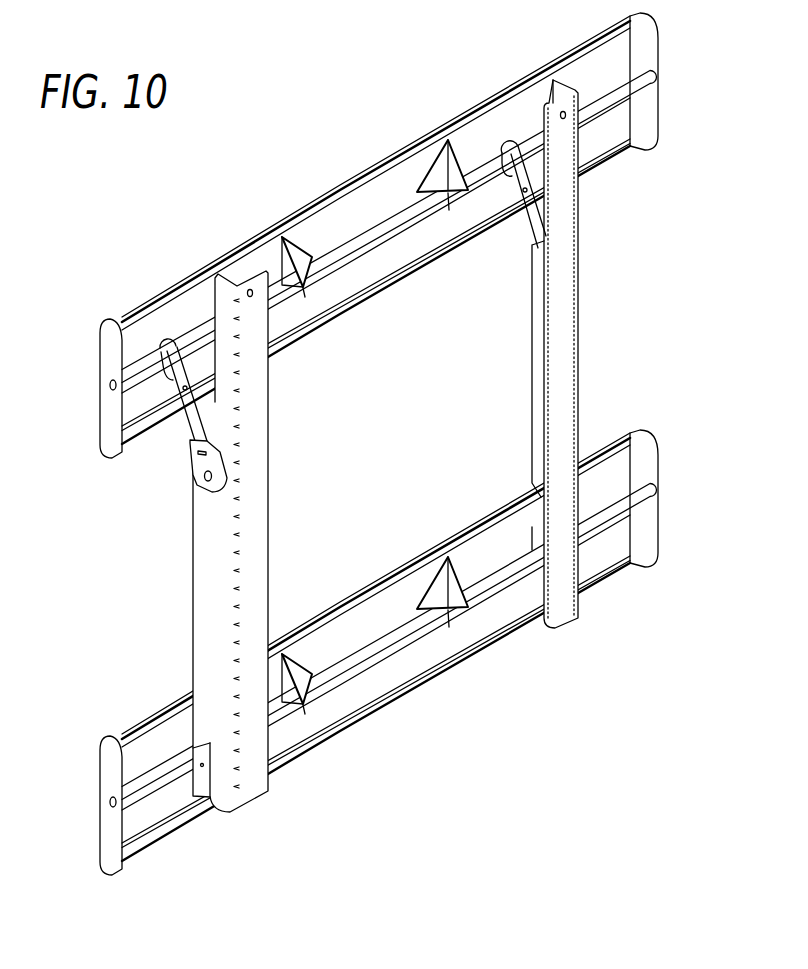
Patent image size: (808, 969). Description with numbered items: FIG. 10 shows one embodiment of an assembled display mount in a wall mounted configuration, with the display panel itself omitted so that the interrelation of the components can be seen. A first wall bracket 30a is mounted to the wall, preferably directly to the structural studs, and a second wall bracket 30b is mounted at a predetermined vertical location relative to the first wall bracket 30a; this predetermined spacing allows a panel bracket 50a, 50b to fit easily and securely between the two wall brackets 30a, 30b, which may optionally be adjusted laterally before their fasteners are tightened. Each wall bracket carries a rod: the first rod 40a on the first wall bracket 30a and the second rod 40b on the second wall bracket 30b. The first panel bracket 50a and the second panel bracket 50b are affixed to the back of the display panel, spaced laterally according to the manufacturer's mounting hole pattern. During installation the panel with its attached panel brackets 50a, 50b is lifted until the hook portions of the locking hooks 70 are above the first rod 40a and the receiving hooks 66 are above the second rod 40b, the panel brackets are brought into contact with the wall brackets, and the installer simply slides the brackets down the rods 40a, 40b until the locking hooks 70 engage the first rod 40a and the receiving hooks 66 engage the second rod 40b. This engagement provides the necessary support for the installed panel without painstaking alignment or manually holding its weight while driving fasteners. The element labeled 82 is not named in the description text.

The first wall bracket 30a is at (667, 45).
The second wall bracket 30b is at (672, 493).
The first rod 40a is at (365, 240).
The second rod 40b is at (396, 647).
The first panel bracket 50a is at (594, 317).
The second panel bracket 50b is at (277, 479).
The receiving hook 66 is at (203, 778).
The locking hook 70 is at (518, 142).
The hook 82 is at (500, 140).